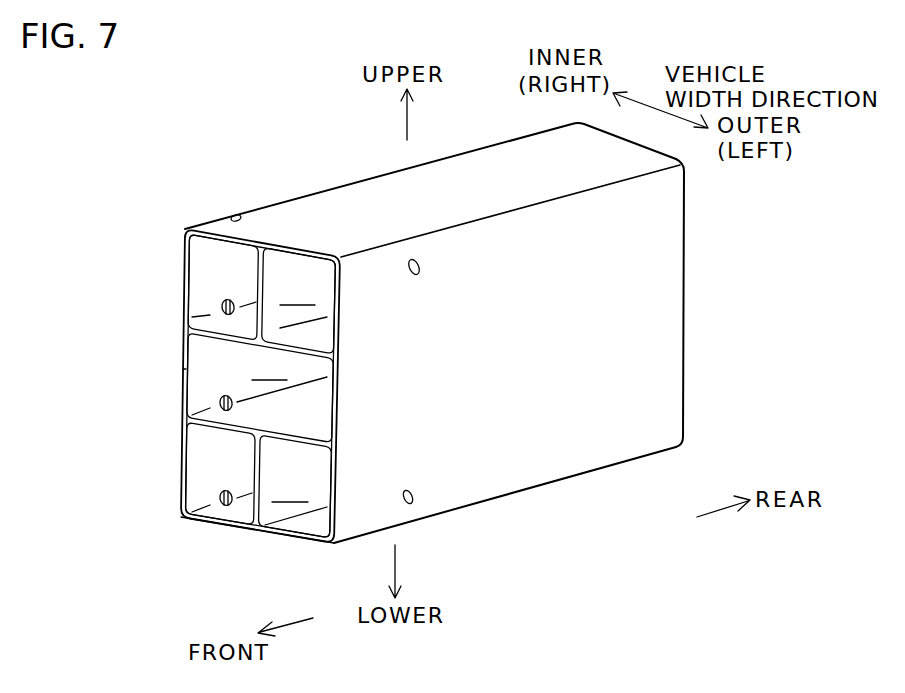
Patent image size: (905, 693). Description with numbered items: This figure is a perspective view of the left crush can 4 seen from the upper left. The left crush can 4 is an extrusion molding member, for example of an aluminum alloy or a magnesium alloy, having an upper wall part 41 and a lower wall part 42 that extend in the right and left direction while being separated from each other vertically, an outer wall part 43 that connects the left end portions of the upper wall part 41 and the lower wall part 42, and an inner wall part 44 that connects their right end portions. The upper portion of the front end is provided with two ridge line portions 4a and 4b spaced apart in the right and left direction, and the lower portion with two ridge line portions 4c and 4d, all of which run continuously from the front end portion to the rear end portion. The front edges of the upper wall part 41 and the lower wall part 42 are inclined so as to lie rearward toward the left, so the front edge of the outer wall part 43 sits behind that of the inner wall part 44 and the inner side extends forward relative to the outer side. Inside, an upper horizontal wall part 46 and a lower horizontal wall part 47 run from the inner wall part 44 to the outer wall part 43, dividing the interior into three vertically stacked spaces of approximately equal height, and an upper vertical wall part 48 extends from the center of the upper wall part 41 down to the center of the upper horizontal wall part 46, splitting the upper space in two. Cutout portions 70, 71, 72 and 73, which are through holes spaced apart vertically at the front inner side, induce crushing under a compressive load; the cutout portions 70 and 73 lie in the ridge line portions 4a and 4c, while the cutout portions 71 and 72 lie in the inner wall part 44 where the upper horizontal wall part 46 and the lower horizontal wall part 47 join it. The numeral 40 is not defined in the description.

The left crush can 4 is at (500, 130).
The ridge line portion 4a is at (633, 180).
The ridge line portion 4b is at (462, 150).
The ridge line portion 4c is at (514, 495).
The ridge line portion 4d is at (181, 514).
The front end opening 40 is at (228, 258).
The upper wall part 41 is at (371, 197).
The lower wall part 42 is at (288, 538).
The outer wall part 43 is at (655, 323).
The inner wall part 44 is at (183, 369).
The upper horizontal wall part 46 is at (190, 338).
The lower horizontal wall part 47 is at (186, 446).
The upper vertical wall part 48 is at (263, 276).
The cutout portion 70 is at (236, 212).
The cutout portion 71 is at (220, 306).
The cutout portion 72 is at (220, 403).
The cutout portion 73 is at (220, 498).